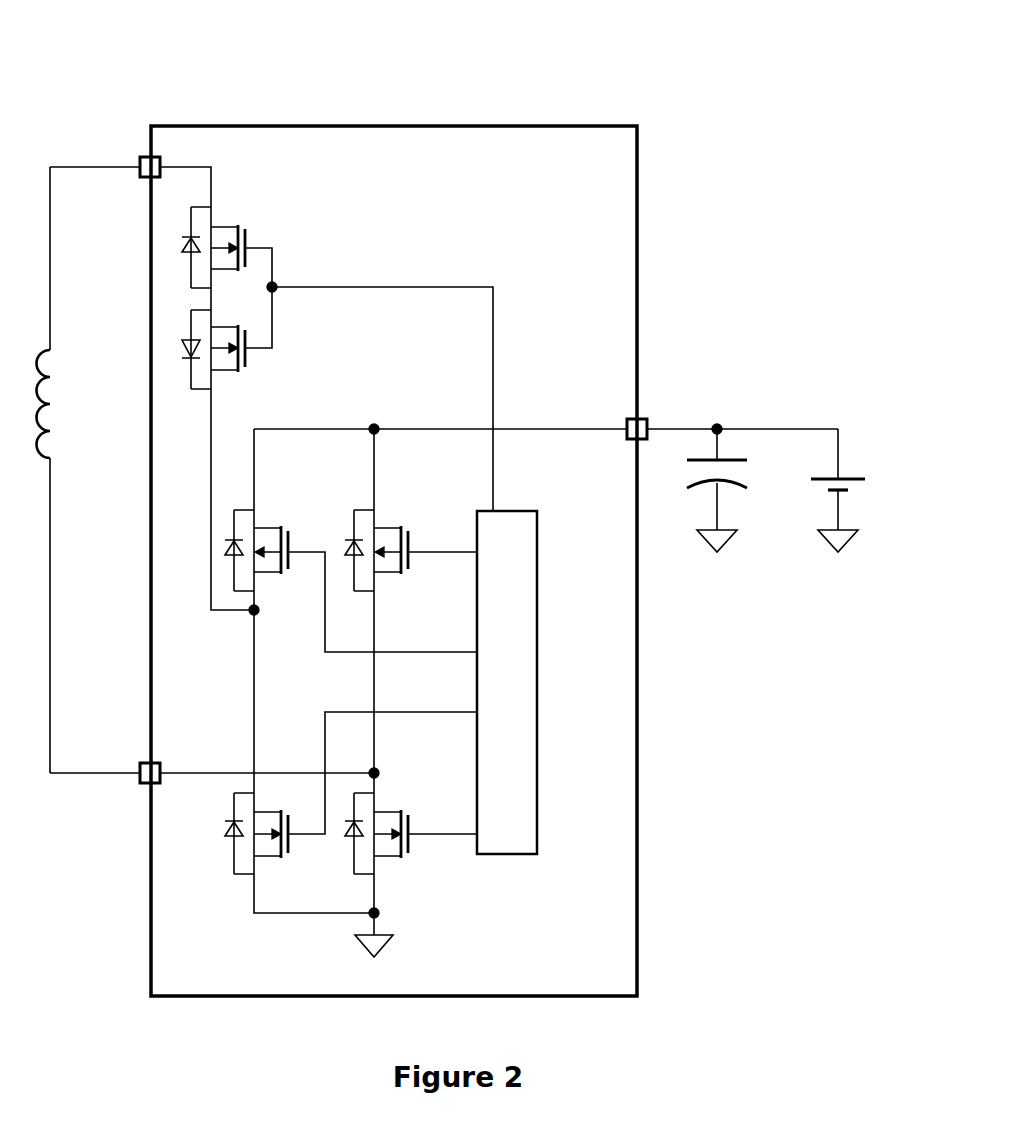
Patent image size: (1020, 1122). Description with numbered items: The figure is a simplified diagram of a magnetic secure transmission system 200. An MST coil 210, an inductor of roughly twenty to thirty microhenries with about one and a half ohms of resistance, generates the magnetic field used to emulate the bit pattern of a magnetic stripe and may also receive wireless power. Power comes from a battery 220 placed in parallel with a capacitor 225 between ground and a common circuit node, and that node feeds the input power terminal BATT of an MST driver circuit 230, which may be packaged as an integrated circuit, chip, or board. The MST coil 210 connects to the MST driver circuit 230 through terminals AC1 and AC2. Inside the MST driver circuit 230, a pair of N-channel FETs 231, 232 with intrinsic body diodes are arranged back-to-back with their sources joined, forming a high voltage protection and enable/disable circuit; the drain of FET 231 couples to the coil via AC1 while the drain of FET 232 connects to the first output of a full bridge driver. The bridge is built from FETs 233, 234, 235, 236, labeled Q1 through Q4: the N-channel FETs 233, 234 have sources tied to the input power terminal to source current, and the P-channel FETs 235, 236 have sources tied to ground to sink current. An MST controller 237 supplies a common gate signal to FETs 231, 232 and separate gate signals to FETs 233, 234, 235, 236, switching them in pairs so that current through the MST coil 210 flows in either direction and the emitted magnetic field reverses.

The magnetic secure transmission system 200 is at (144, 65).
The MST coil 210 is at (65, 352).
The battery 220 is at (850, 470).
The capacitor 225 is at (745, 432).
The MST driver circuit 230 is at (641, 125).
The field effect transistor 231 is at (252, 233).
The field effect transistor 232 is at (254, 374).
The field effect transistor 233 is at (270, 508).
The field effect transistor 234 is at (390, 510).
The field effect transistor 235 is at (270, 867).
The field effect transistor 236 is at (390, 867).
The MST controller 237 is at (538, 660).